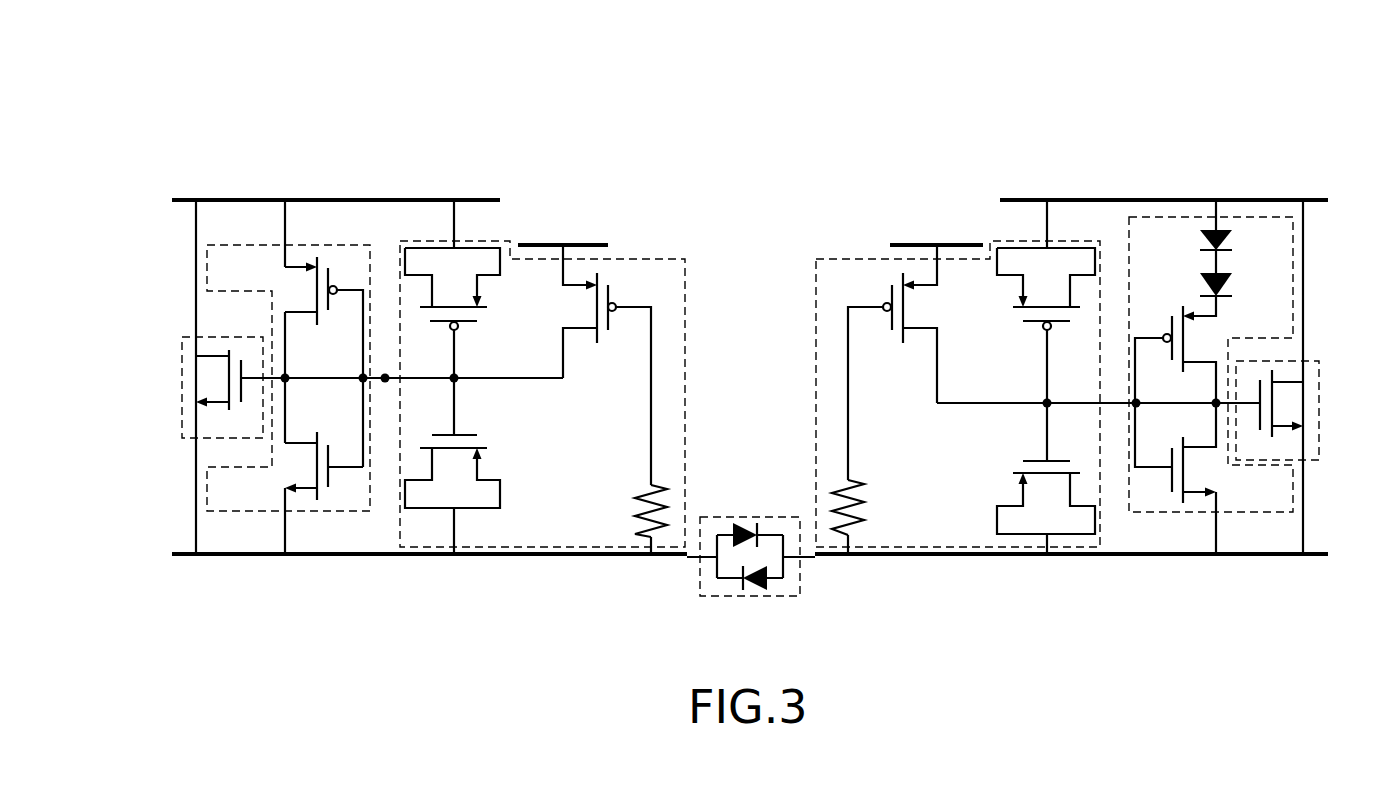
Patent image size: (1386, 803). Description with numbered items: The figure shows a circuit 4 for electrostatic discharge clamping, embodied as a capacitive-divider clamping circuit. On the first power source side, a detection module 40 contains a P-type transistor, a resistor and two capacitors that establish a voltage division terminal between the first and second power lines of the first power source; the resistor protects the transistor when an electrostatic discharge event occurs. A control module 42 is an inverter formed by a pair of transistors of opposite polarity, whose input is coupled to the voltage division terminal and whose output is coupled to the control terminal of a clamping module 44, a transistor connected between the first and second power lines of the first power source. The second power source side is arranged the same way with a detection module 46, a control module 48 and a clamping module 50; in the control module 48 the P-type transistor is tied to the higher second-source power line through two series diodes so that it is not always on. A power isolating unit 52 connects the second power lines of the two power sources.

The circuit for electrostatic discharge clamping 4 is at (158, 128).
The detection module 40 is at (643, 259).
The control module 42 is at (370, 246).
The clamping module 44 is at (243, 337).
The detection module 46 is at (856, 259).
The control module 48 is at (1129, 258).
The clamping module 50 is at (1320, 392).
The power isolating unit 52 is at (720, 598).